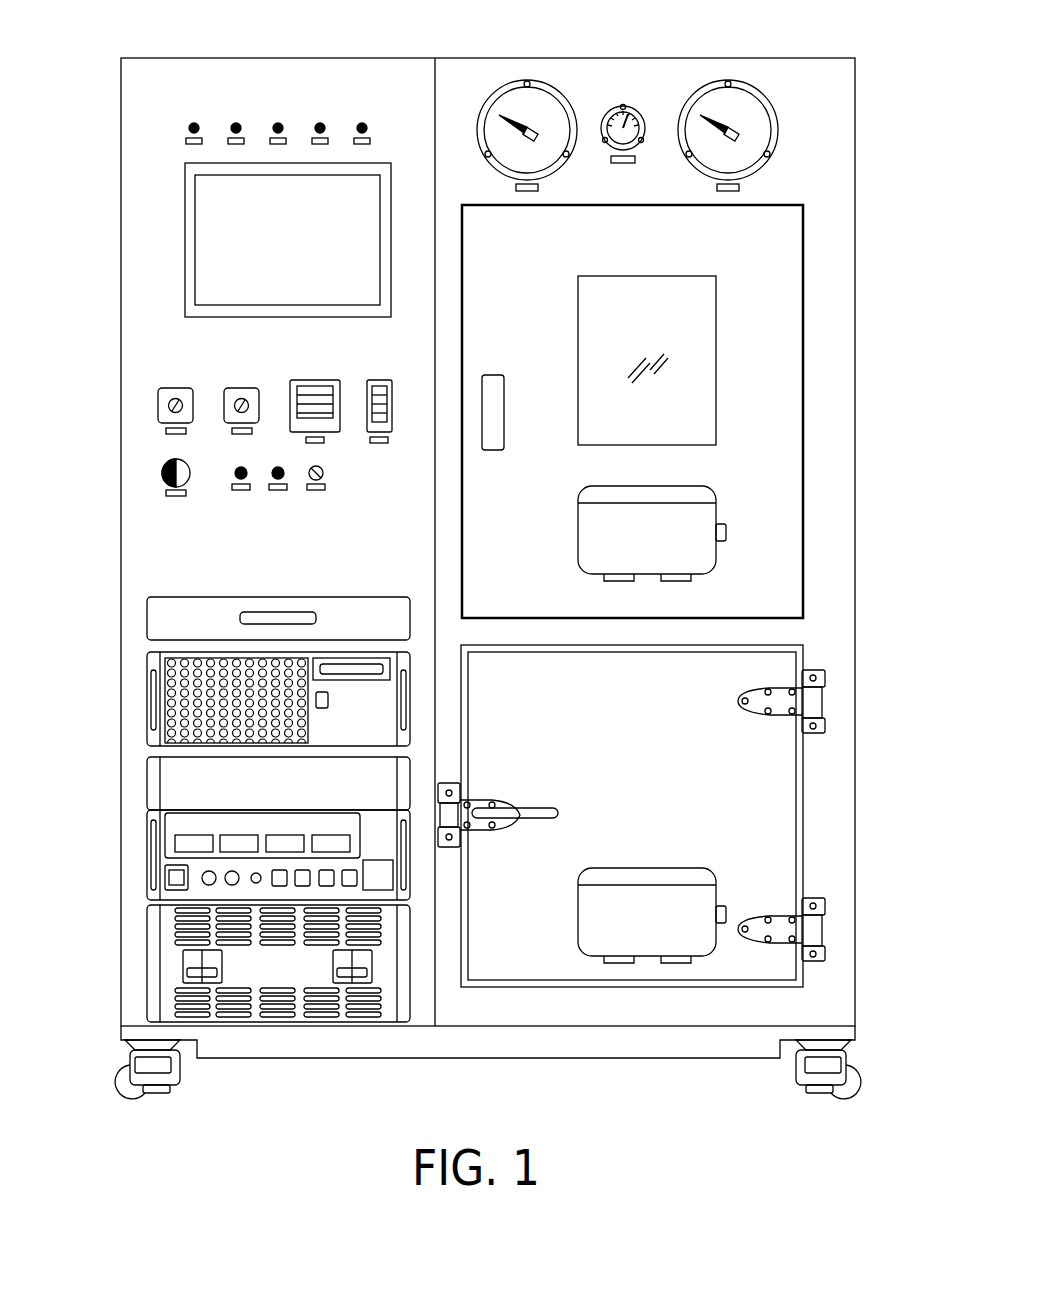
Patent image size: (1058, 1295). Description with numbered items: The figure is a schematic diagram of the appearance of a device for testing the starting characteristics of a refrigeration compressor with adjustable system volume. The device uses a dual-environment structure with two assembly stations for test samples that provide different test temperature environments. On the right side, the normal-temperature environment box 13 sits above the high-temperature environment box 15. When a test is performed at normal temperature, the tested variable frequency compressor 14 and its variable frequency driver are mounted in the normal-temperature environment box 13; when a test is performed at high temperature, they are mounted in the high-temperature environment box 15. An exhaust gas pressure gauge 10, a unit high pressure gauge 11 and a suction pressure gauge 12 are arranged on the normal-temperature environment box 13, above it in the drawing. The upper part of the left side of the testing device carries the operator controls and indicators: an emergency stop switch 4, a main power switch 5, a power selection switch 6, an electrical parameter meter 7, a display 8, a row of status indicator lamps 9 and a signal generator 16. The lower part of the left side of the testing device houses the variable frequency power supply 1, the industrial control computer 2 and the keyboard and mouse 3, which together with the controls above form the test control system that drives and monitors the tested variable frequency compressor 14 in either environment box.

The variable frequency power supply 1 is at (168, 970).
The industrial control computer 2 is at (152, 700).
The keyboard and mouse 3 is at (168, 614).
The emergency stop switch 4 is at (163, 478).
The main power switch 5 is at (163, 400).
The power selection switch 6 is at (233, 407).
The electrical parameter meter 7 is at (295, 393).
The display 8 is at (225, 248).
The status indicator lamp 9 is at (187, 126).
The exhaust gas pressure gauge 10 is at (527, 85).
The unit high pressure gauge 11 is at (623, 107).
The suction pressure gauge 12 is at (728, 82).
The normal-temperature environment box 13 is at (756, 358).
The tested variable frequency compressor 14 is at (694, 552).
The high-temperature environment box 15 is at (695, 827).
The signal generator 16 is at (368, 385).